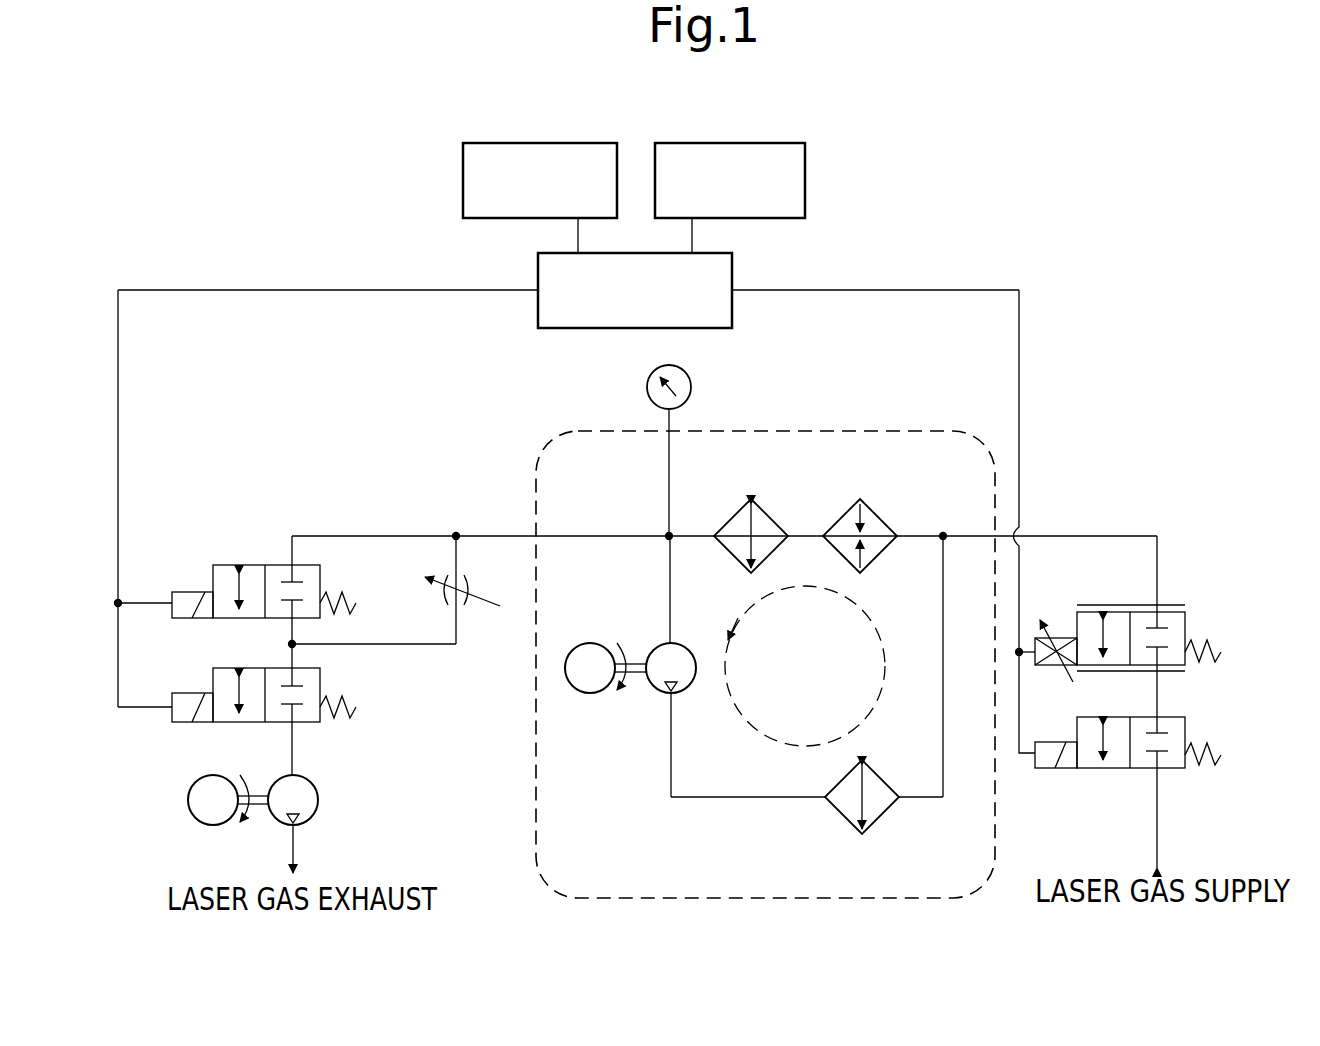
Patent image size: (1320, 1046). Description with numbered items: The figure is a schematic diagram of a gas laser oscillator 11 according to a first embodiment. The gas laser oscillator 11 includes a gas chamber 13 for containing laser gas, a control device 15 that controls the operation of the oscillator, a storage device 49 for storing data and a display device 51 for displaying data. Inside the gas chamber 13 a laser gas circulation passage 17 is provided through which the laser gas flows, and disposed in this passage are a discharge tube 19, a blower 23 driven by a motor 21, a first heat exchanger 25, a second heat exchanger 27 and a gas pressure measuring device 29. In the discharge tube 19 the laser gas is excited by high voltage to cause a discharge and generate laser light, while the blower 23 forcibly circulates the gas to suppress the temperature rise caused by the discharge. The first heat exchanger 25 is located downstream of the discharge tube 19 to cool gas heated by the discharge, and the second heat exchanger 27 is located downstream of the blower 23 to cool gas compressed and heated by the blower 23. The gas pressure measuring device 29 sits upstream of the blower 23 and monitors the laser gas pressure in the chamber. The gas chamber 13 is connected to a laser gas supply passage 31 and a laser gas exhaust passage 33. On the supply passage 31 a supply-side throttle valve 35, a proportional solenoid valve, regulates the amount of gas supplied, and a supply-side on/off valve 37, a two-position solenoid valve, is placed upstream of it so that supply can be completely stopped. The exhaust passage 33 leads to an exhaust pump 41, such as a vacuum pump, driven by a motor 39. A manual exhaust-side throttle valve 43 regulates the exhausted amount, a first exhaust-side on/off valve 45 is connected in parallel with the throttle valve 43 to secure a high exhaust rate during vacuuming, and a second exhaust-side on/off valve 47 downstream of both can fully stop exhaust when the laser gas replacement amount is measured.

The gas laser oscillator 11 is at (1105, 238).
The gas chamber 13 is at (900, 430).
The control device 15 is at (732, 272).
The laser gas circulation passage 17 is at (727, 797).
The discharge tube 19 is at (878, 518).
The motor 21 is at (584, 694).
The blower 23 is at (657, 694).
The first heat exchanger 25 is at (769, 518).
The second heat exchanger 27 is at (884, 815).
The gas pressure measuring device 29 is at (692, 387).
The laser gas supply passage 31 is at (1122, 536).
The laser gas exhaust passage 33 is at (383, 535).
The supply-side throttle valve 35 is at (1187, 625).
The supply-side on/off valve 37 is at (1187, 730).
The motor 39 is at (203, 823).
The exhaust pump 41 is at (316, 812).
The exhaust-side throttle valve 43 is at (466, 584).
The first exhaust-side on/off valve 45 is at (322, 585).
The second exhaust-side on/off valve 47 is at (322, 690).
The storage device 49 is at (553, 143).
The display device 51 is at (733, 143).